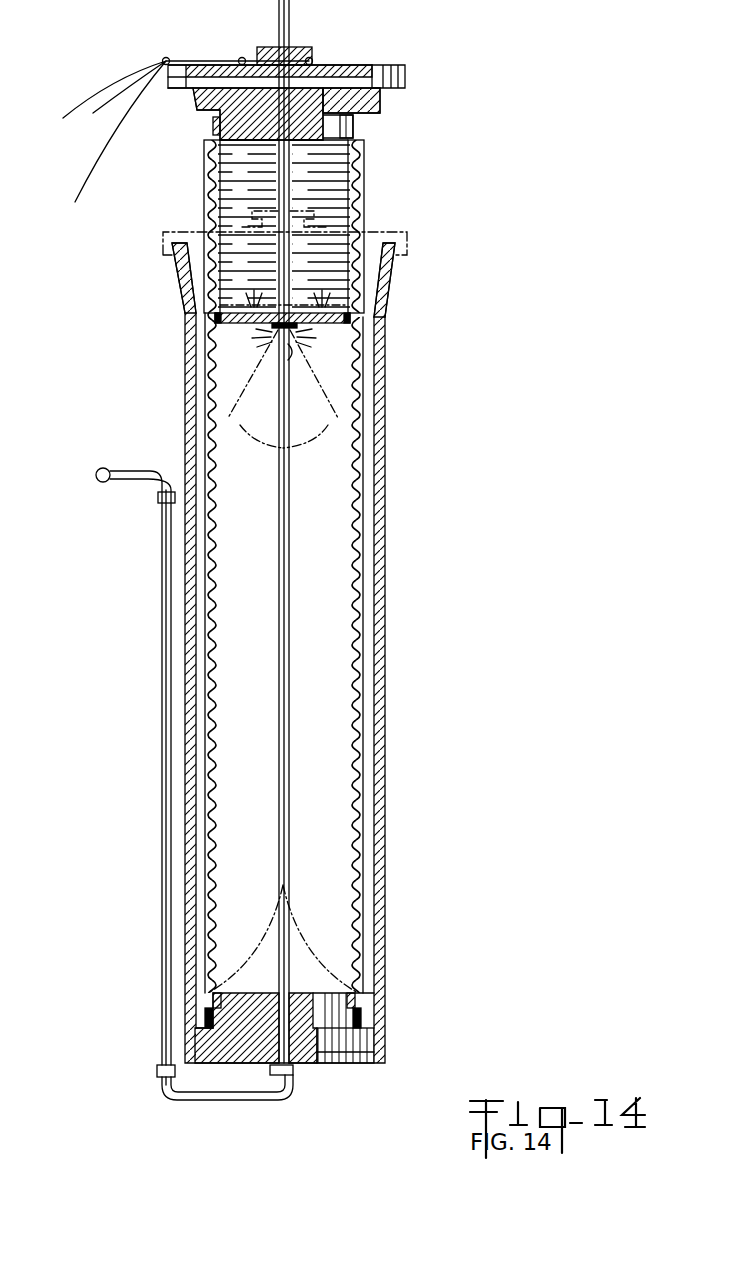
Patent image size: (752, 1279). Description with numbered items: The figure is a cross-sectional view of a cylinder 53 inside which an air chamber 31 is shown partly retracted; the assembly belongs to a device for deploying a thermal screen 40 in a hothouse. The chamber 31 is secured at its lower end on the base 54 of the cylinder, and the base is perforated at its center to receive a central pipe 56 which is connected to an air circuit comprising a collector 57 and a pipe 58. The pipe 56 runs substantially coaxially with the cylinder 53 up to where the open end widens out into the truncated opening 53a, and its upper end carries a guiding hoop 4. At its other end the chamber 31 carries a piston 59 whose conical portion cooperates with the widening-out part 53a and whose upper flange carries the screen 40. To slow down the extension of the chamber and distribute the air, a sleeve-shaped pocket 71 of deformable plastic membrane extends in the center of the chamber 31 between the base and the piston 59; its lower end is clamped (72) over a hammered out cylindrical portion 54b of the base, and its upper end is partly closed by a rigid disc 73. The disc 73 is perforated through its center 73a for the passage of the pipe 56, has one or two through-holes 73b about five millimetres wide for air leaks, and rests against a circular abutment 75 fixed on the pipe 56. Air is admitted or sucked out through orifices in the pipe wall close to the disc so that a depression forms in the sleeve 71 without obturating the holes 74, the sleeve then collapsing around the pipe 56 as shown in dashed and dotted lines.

The screen 40 is at (85, 104).
The piston 59 is at (303, 147).
The guiding hoop 4 is at (283, 173).
The widening-out part 53a is at (393, 271).
The rigid disc 73 is at (347, 325).
The central perforation 73a is at (272, 317).
The through-holes 73b is at (212, 316).
The circular abutment 75 is at (275, 327).
The holes 74 is at (283, 352).
The sleeve-shaped pocket 71 is at (355, 619).
The air chamber 31 is at (357, 474).
The cylinder 53 is at (385, 523).
The pipe 56 is at (284, 709).
The pipe 58 is at (165, 768).
The collector 57 is at (104, 468).
The base 54 is at (318, 1052).
The hammered out cylindrical portion 54b is at (222, 993).
The clamp 72 is at (349, 994).